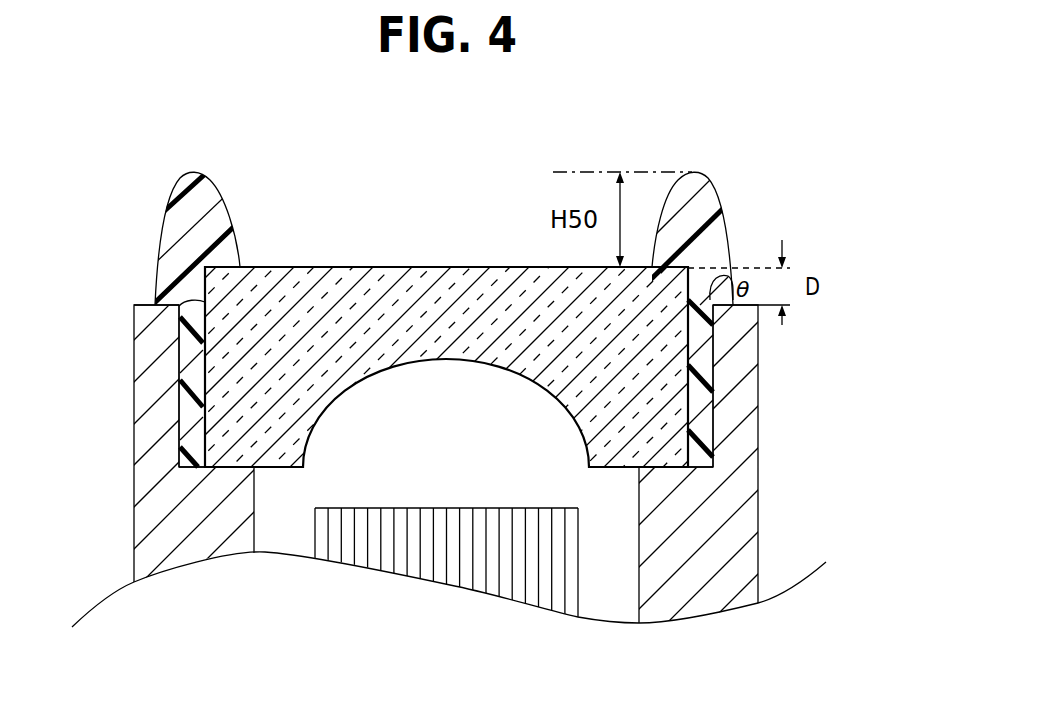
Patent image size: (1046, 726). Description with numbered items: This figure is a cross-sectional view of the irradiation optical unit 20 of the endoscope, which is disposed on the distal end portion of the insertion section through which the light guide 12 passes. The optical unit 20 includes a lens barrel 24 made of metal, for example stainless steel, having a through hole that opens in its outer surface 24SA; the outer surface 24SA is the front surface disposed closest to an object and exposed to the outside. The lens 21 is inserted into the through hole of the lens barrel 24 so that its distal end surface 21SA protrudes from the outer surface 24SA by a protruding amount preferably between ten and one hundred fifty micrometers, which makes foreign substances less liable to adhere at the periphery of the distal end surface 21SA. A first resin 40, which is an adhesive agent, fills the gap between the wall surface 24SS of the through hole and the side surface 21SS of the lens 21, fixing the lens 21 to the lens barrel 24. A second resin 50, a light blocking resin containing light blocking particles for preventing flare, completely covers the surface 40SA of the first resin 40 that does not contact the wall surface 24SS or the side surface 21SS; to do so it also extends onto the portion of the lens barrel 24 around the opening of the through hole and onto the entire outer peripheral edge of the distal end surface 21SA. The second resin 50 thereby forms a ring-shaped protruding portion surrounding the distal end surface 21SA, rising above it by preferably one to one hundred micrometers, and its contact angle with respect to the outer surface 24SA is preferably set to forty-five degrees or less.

The light guide 12 is at (578, 562).
The optical unit 20 is at (464, 363).
The lens 21 is at (448, 267).
The distal end surface 21SA is at (312, 264).
The side surface 21SS is at (200, 350).
The lens barrel 24 is at (758, 448).
The outer surface 24SA is at (143, 300).
The wall surface 24SS is at (186, 375).
The first resin 40 is at (713, 388).
The surface 40SA is at (192, 295).
The second resin 50 is at (722, 196).